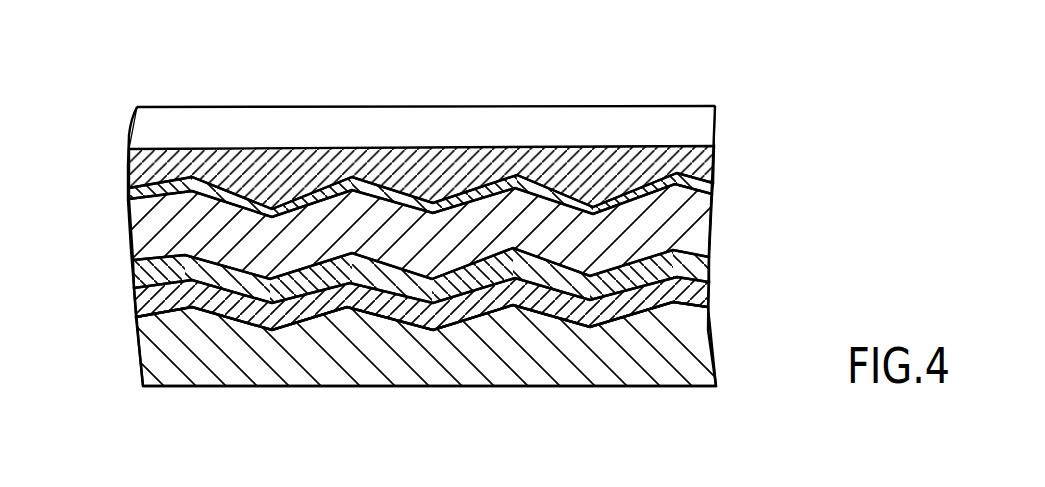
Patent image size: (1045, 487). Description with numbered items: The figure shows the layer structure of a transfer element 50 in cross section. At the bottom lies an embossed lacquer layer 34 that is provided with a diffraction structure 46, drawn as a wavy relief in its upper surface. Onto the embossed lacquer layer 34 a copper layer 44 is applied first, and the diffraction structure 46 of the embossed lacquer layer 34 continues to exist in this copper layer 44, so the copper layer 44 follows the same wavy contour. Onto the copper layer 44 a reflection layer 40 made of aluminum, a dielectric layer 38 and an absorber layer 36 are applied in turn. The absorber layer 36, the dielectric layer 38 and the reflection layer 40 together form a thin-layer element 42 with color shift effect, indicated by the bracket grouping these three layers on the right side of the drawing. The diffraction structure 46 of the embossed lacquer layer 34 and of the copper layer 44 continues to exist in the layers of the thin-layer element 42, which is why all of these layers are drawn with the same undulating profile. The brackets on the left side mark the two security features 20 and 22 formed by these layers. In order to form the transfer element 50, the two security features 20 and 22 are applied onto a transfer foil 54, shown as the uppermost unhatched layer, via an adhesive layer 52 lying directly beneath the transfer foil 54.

The transfer element 50 is at (128, 63).
The transfer foil 54 is at (697, 123).
The adhesive layer 52 is at (700, 163).
The absorber layer 36 is at (695, 181).
The dielectric layer 38 is at (690, 213).
The reflection layer 40 is at (705, 258).
The thin-layer element 42 is at (790, 167).
The security feature 20 is at (113, 192).
The security feature 22 is at (113, 292).
The copper layer 44 is at (697, 297).
The embossed lacquer layer 34 is at (700, 337).
The diffraction structure 46 is at (374, 310).